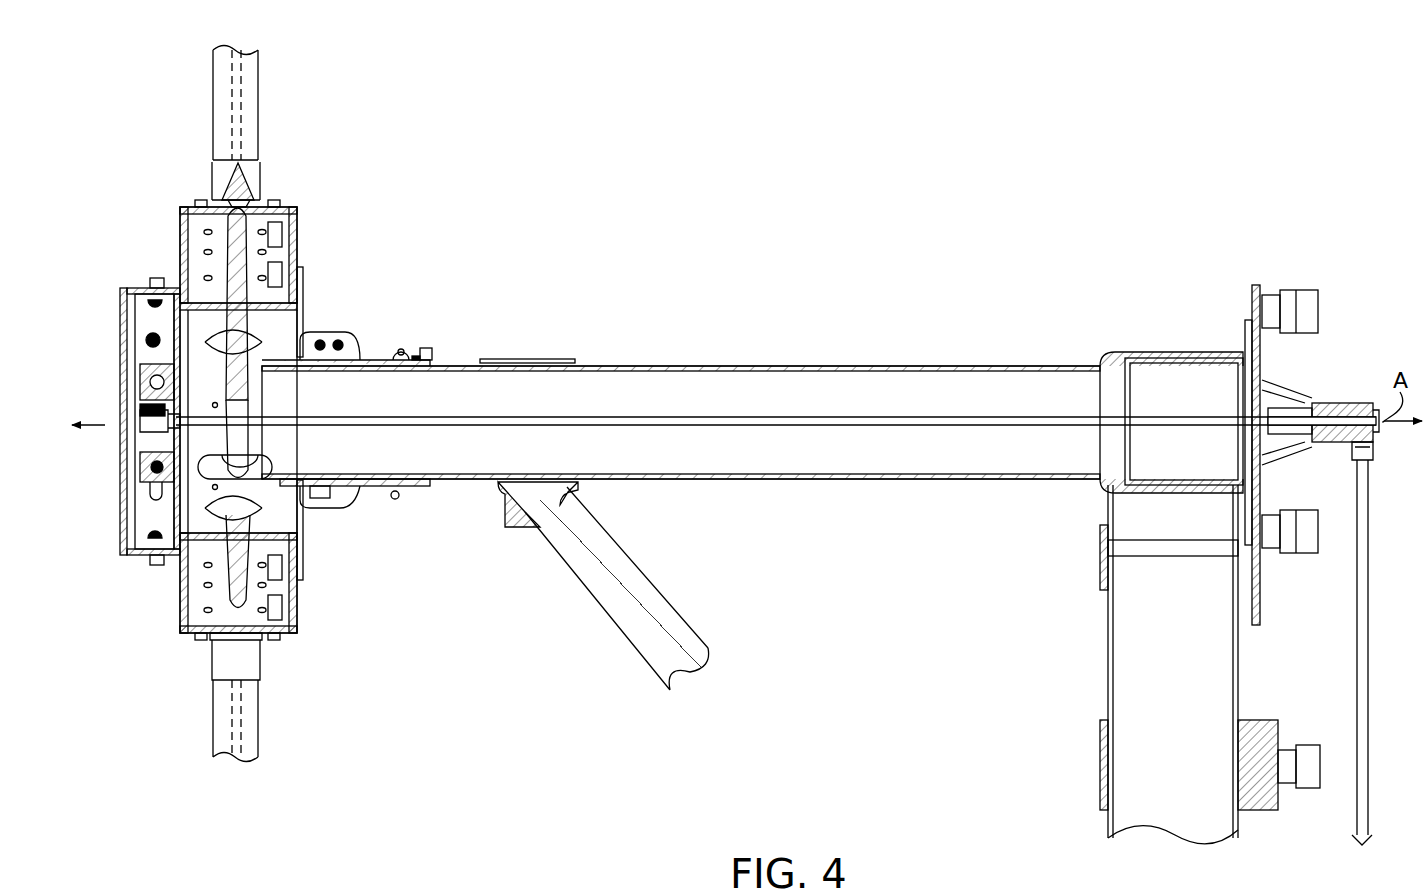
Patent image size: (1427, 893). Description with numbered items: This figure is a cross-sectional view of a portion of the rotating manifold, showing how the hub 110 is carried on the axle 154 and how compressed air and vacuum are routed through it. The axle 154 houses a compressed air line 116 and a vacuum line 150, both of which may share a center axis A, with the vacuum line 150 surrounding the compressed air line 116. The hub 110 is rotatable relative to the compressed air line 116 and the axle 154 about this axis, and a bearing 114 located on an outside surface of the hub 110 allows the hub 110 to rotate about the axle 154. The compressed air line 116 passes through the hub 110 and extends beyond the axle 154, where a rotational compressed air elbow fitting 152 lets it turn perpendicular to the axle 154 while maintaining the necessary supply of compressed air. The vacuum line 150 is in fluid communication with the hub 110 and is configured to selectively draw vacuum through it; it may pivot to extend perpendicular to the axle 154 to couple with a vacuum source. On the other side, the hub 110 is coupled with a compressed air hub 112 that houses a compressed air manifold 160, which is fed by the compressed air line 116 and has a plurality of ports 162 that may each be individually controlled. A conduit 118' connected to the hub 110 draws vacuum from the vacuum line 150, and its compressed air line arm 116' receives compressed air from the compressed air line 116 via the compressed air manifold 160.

The hub 110 is at (300, 218).
The compressed air hub 112 is at (105, 318).
The bearing 114 is at (372, 357).
The compressed air line 116 is at (758, 609).
The compressed air line arm 116' is at (181, 403).
The conduit 118' is at (279, 112).
The vacuum line 150 is at (892, 365).
The rotational compressed air elbow fitting 152 is at (1358, 398).
The axle 154 is at (648, 364).
The compressed air manifold 160 is at (143, 378).
The plurality of ports 162 is at (148, 500).